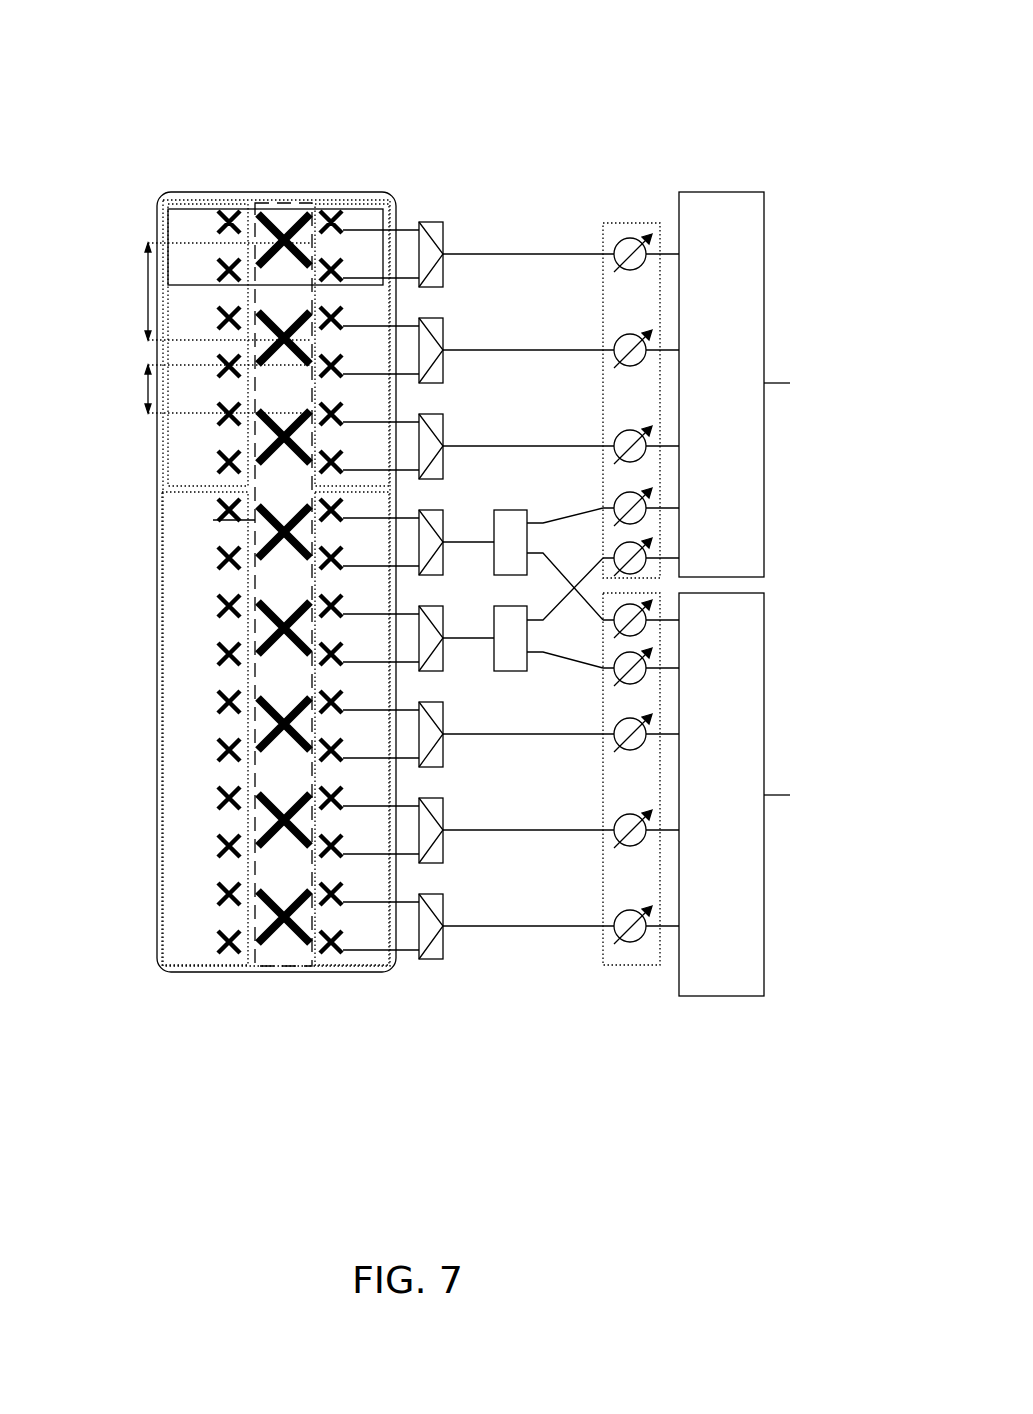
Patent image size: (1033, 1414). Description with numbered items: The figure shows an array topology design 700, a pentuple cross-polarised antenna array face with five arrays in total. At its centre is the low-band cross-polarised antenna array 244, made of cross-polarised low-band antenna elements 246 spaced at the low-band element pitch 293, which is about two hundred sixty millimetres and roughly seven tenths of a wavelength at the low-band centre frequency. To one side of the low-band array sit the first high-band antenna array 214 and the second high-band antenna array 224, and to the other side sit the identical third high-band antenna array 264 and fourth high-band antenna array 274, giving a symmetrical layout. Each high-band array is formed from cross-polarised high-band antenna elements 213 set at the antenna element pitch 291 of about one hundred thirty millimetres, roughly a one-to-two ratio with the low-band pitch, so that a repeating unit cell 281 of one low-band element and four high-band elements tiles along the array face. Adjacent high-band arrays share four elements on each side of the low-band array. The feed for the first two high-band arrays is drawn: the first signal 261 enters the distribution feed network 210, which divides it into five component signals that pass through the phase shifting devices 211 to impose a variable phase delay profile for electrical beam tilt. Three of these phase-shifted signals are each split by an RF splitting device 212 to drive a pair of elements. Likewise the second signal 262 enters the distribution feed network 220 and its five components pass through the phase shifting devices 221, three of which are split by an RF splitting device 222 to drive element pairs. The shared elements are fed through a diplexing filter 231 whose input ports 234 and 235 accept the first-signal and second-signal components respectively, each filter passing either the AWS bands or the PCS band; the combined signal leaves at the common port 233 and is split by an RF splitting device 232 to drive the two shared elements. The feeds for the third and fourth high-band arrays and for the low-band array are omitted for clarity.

The array topology design 700 is at (118, 26).
The unit cell 281 is at (283, 196).
The low-band cross-polarised antenna array 244 is at (268, 972).
The high-band antenna array 3 264 is at (163, 447).
The high-band antenna array 4 274 is at (157, 733).
The high-band antenna array 1 214 is at (397, 205).
The high-band antenna array 2 224 is at (393, 968).
The low-band element pitch 293 is at (198, 291).
The antenna element pitch 291 is at (198, 389).
The cross-polarised high-band antenna element 213 is at (219, 932).
The cross-polarised low-band antenna element 246 is at (264, 956).
The RF splitting device 212 is at (431, 414).
The RF splitting device 232 is at (431, 606).
The common port 233 is at (466, 633).
The diplexing filter 231 is at (527, 681).
The input port 234 is at (546, 568).
The input port 235 is at (546, 664).
The RF splitting device 222 is at (431, 894).
The phase shifting device 211 is at (632, 222).
The phase shifting device 221 is at (634, 967).
The distribution feed network 210 is at (753, 366).
The distribution feed network 220 is at (753, 778).
The signal S1 261 is at (795, 386).
The signal S2 262 is at (795, 795).